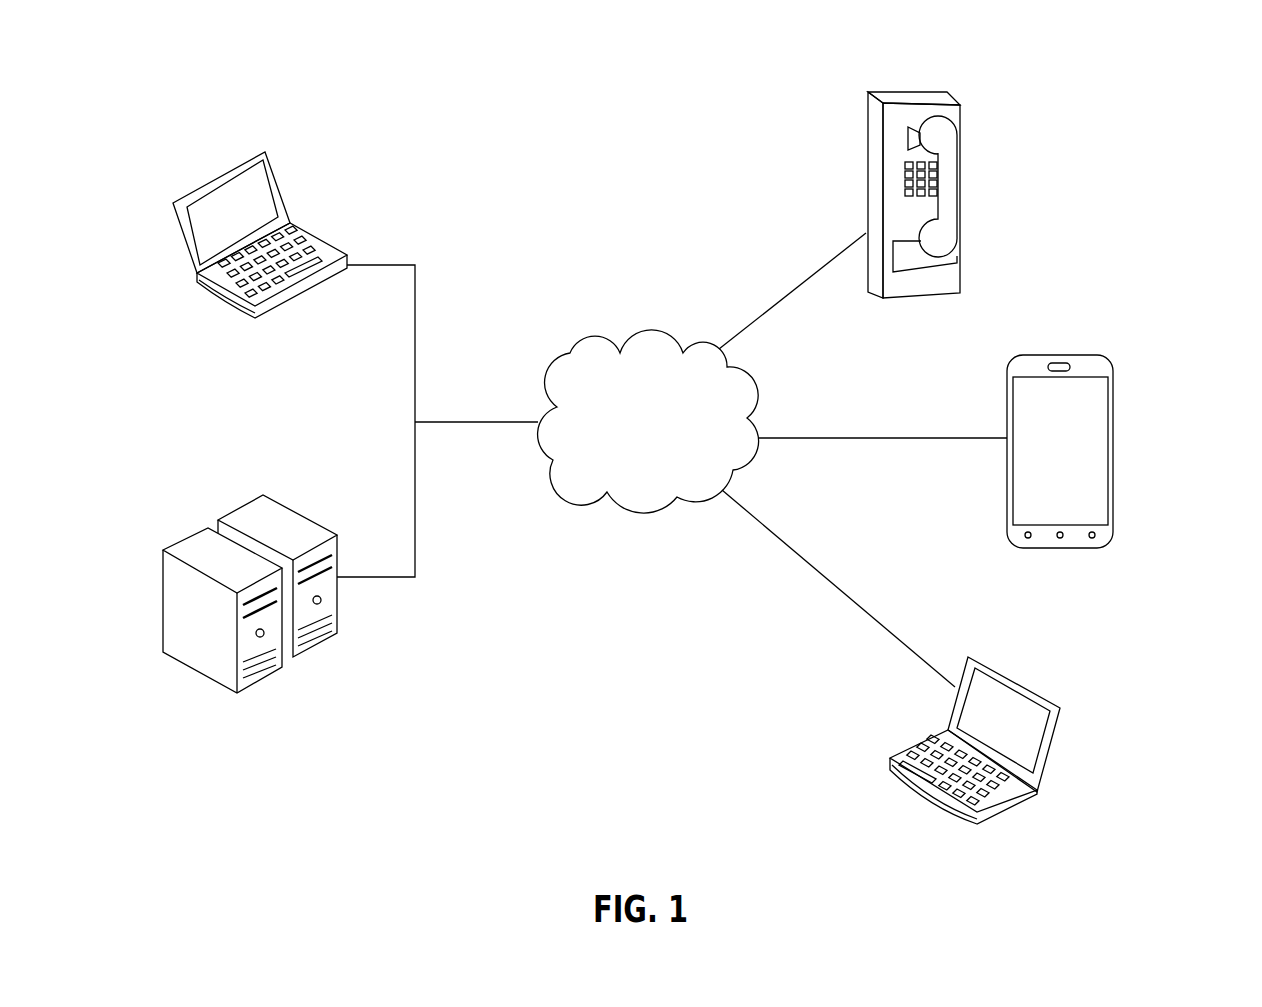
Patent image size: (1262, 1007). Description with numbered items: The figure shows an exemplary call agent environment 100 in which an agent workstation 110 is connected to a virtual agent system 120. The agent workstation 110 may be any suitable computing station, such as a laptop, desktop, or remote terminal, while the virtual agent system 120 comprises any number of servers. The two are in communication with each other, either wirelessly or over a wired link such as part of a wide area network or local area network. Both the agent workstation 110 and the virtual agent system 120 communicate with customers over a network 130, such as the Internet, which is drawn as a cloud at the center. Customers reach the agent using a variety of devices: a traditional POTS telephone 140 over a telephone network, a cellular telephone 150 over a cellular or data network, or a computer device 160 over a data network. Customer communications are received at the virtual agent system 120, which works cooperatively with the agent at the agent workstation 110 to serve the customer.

The call agent environment 100 is at (1240, 45).
The agent workstation 110 is at (247, 155).
The virtual agent system 120 is at (170, 538).
The network 130 is at (648, 421).
The POTS telephone 140 is at (960, 108).
The cellular telephone 150 is at (1085, 360).
The computer device 160 is at (1033, 692).